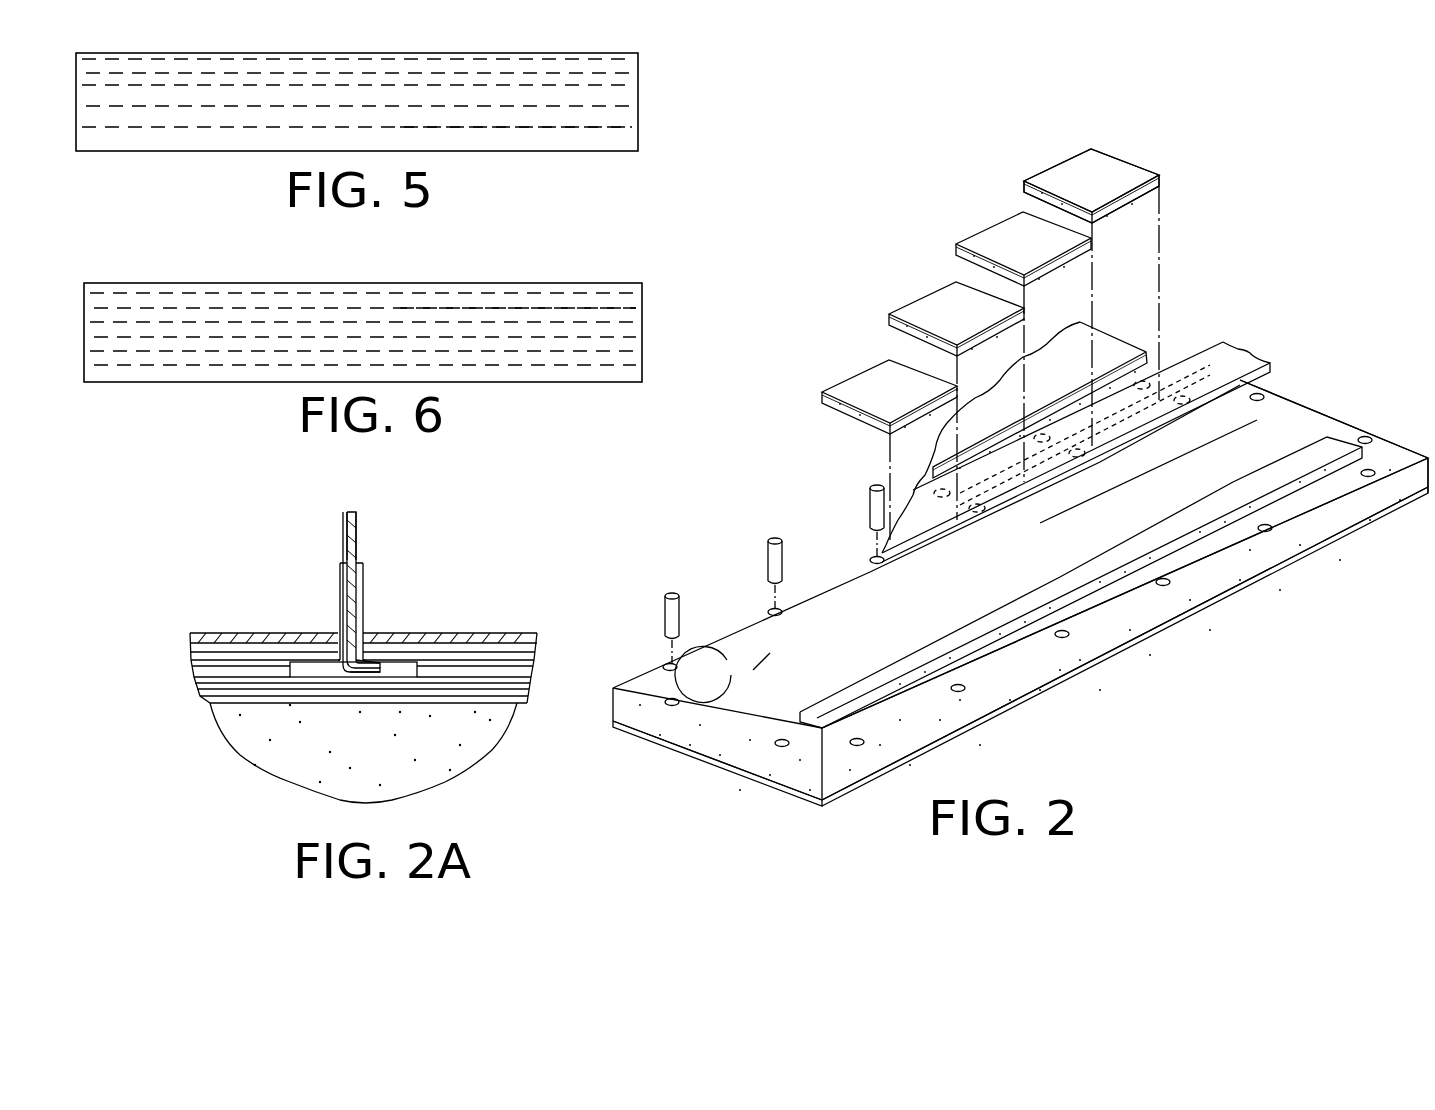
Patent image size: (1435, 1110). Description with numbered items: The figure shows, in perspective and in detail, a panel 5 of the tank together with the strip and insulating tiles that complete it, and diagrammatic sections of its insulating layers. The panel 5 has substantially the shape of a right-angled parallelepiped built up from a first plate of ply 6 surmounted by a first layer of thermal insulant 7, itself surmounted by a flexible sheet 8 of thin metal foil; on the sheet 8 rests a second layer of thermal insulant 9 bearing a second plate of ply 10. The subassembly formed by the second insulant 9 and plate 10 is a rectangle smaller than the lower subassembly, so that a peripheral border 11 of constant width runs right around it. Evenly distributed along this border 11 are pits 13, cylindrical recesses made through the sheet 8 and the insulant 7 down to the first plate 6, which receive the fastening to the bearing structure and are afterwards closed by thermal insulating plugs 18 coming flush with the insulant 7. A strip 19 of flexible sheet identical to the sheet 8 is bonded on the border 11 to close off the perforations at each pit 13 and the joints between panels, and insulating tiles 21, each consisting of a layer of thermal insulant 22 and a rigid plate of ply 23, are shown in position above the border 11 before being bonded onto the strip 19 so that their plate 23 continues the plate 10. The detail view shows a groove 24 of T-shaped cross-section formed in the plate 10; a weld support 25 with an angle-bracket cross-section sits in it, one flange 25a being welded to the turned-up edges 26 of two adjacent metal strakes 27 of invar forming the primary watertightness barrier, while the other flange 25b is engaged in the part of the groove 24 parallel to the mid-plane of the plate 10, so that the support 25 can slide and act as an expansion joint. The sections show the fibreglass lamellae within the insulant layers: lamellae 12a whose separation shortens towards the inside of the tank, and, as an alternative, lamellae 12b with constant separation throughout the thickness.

In FIG. 2, the panel 5 is at (1356, 416).
In FIG. 2, the first plate of ply 6 is at (1197, 617).
In FIG. 5, the first layer of thermal insulant 7 is at (648, 101).
In FIG. 6, the first layer of thermal insulant 7 is at (650, 327).
In FIG. 2, the first layer of thermal insulant 7 is at (1245, 573).
In FIG. 2, the flexible sheet 8 is at (1310, 520).
In FIG. 2A, the second layer of thermal insulant 9 is at (352, 778).
In FIG. 2, the second layer of thermal insulant 9 is at (1370, 450).
In FIG. 2A, the second plate of ply 10 is at (517, 680).
In FIG. 2, the second plate of ply 10 is at (1097, 585).
In FIG. 2, the peripheral border 11 is at (1393, 460).
In FIG. 5, the lamellae 12a is at (542, 129).
In FIG. 6, the lamellae 12b is at (527, 307).
In FIG. 2, the pits 13 is at (667, 667).
In FIG. 2, the plugs 18 is at (664, 603).
In FIG. 2, the strip 19 is at (1230, 352).
In FIG. 2, the insulating tiles 21 is at (998, 212).
In FIG. 2, the layer of thermal insulant 22 is at (1137, 198).
In FIG. 2, the rigid plate of ply 23 is at (1120, 175).
In FIG. 2A, the grooves 24 is at (308, 667).
In FIG. 2A, the weld support 25 is at (362, 514).
In FIG. 2A, the flange 25a is at (345, 543).
In FIG. 2A, the flange 25b is at (387, 668).
In FIG. 2A, the turned-up edges 26 is at (337, 598).
In FIG. 2A, the metal strakes 27 is at (266, 628).
In FIG. 2, the metal strakes 27 is at (1273, 425).